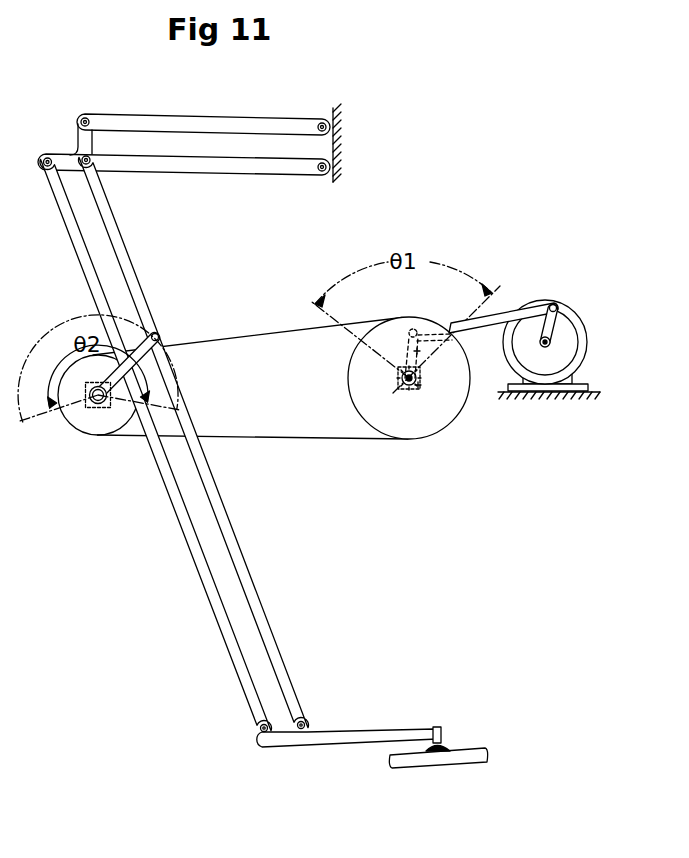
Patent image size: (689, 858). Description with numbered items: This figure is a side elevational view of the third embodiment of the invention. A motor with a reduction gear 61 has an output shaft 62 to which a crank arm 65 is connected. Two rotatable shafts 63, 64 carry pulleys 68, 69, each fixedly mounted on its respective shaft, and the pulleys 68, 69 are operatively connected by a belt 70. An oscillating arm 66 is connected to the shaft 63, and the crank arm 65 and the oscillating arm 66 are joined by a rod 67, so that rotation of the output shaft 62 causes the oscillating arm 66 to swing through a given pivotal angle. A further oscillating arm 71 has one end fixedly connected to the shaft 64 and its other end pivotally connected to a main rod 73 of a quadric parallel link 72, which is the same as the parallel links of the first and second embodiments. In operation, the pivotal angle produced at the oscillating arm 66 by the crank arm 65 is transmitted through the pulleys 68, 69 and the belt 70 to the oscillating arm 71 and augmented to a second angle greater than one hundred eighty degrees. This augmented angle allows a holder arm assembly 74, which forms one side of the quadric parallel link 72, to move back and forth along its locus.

The motor with a reduction gear 61 is at (570, 355).
The output shaft 62 is at (545, 350).
The rotatable shaft 63 is at (400, 386).
The rotatable shaft 64 is at (97, 413).
The crank arm 65 is at (555, 327).
The oscillating arm 66 is at (416, 362).
The rod 67 is at (512, 308).
The pulley 68 is at (422, 434).
The pulley 69 is at (78, 420).
The belt 70 is at (268, 332).
The oscillating arm 71 is at (157, 333).
The quadric parallel link 72 is at (200, 573).
The main rod 73 is at (270, 630).
The holder arm assembly 74 is at (333, 738).